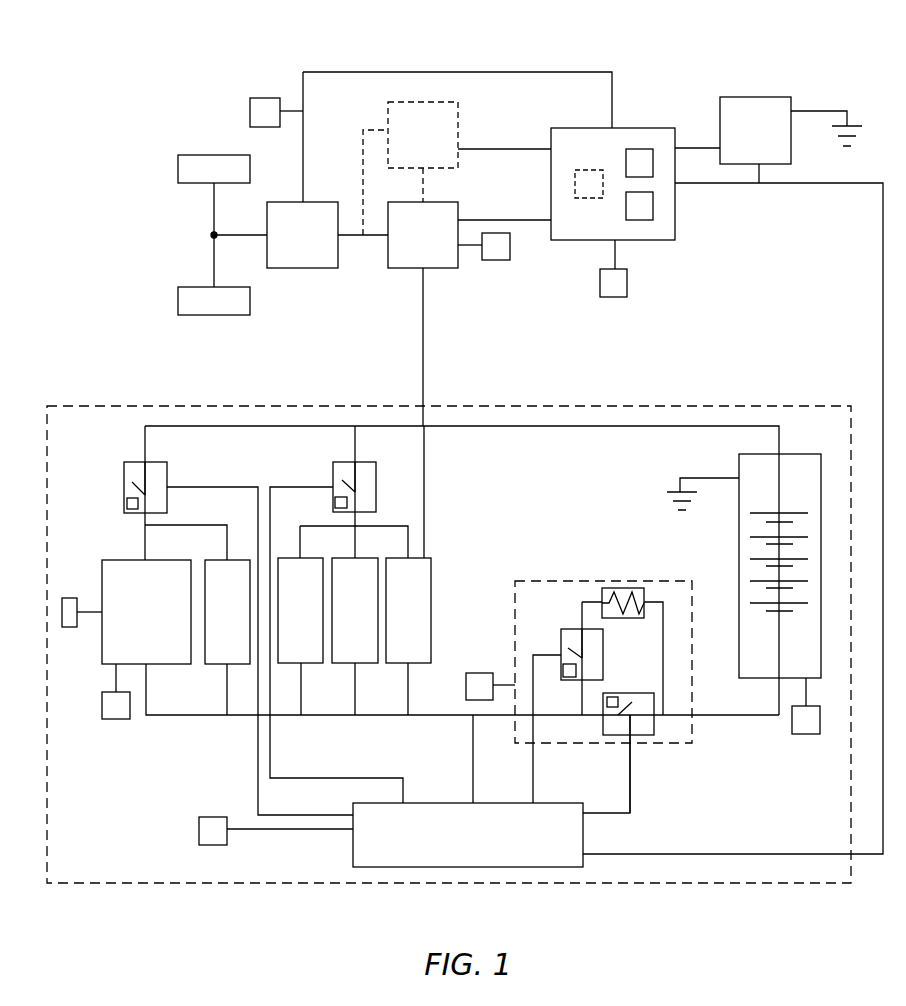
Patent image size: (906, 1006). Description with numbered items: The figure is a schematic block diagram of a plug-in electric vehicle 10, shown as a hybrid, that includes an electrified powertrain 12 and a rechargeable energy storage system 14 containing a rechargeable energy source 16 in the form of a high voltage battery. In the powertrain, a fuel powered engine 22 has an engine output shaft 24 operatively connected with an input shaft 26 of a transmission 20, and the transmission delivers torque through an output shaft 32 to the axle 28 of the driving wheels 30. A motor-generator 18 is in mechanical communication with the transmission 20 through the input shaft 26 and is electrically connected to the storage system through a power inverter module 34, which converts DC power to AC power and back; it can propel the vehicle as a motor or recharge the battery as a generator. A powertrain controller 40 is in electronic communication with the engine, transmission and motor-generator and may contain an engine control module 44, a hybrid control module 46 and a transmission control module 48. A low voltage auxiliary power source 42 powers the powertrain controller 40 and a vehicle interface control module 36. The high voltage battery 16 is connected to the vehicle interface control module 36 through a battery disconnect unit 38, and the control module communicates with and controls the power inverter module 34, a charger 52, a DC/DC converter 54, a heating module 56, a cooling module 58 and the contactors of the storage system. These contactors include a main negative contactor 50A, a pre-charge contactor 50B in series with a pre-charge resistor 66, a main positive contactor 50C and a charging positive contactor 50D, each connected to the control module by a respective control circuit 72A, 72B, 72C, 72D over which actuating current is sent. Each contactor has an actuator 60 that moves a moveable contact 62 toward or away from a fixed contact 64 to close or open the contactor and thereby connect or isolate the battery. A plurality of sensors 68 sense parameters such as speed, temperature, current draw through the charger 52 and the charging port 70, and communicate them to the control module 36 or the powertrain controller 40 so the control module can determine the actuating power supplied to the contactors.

The plug-in electric vehicle 10 is at (148, 82).
The electrified powertrain 12 is at (718, 70).
The rechargeable energy storage system 14 is at (88, 392).
The rechargeable energy source 16 is at (739, 560).
The motor-generator 18 is at (402, 270).
The transmission 20 is at (308, 270).
The fuel powered engine 22 is at (458, 112).
The engine output shaft 24 is at (362, 150).
The input shaft 26 is at (373, 240).
The axle 28 is at (212, 260).
The driving wheels 30 is at (178, 165).
The output shaft 32 is at (252, 240).
The power inverter module 34 is at (408, 610).
The vehicle interface control module 36 is at (350, 848).
The battery disconnect unit 38 is at (552, 570).
The powertrain controller 40 is at (618, 194).
The auxiliary power source 42 is at (791, 152).
The engine control module 44 is at (572, 182).
The hybrid control module 46 is at (640, 150).
The transmission control module 48 is at (653, 207).
The main negative contactor 50A is at (634, 745).
The pre-charge contactor 50B is at (578, 630).
The main positive contactor 50C is at (366, 464).
The charging positive contactor 50D is at (162, 464).
The charger 52 is at (102, 636).
The DC/DC converter 54 is at (227, 612).
The heating module 56 is at (300, 610).
The cooling module 58 is at (355, 610).
The actuator 60 is at (124, 503).
The moveable contact 62 is at (150, 492).
The fixed contact 64 is at (145, 472).
The pre-charge resistor 66 is at (623, 590).
The sensors 68 is at (250, 112).
The charging port 70 is at (72, 598).
The control circuit 72A is at (640, 790).
The control circuit 72B is at (533, 783).
The control circuit 72C is at (286, 760).
The control circuit 72D is at (256, 770).